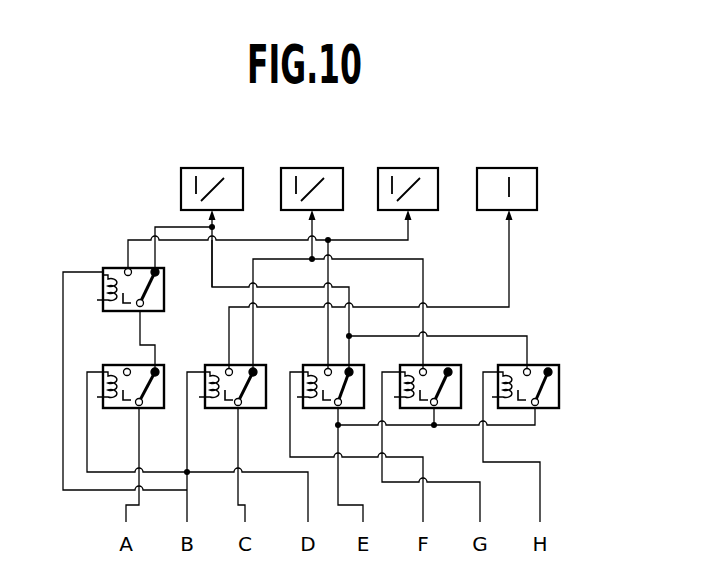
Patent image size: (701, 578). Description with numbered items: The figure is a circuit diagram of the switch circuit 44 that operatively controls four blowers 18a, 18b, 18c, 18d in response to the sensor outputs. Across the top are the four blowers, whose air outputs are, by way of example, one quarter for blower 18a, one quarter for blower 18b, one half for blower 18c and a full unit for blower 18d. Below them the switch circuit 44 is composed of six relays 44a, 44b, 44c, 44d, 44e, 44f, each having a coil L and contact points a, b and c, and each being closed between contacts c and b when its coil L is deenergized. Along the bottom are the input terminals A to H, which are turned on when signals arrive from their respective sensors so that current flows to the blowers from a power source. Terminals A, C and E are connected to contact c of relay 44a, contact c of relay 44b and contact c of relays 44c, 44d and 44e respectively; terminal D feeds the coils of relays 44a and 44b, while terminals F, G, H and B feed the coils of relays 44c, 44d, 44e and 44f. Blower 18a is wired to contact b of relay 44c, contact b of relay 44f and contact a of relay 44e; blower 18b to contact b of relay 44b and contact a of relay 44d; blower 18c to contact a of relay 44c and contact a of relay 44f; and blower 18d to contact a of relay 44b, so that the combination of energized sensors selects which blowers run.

The blower 18a is at (229, 168).
The blower 18b is at (329, 168).
The blower 18c is at (424, 168).
The blower 18d is at (521, 168).
The switch circuit 44 is at (528, 247).
The relay 44a is at (121, 410).
The relay 44b is at (219, 410).
The relay 44c is at (318, 410).
The relay 44d is at (416, 410).
The relay 44e is at (516, 410).
The relay 44f is at (108, 266).